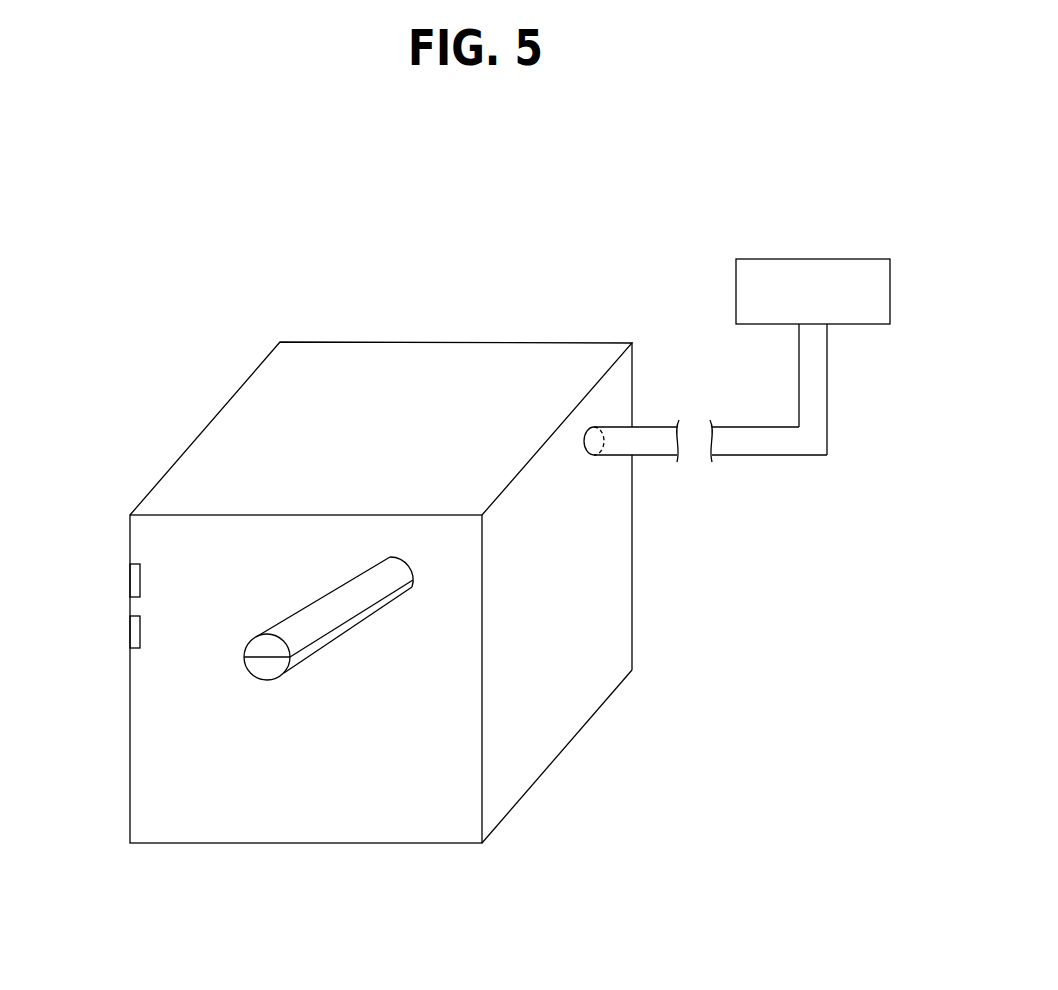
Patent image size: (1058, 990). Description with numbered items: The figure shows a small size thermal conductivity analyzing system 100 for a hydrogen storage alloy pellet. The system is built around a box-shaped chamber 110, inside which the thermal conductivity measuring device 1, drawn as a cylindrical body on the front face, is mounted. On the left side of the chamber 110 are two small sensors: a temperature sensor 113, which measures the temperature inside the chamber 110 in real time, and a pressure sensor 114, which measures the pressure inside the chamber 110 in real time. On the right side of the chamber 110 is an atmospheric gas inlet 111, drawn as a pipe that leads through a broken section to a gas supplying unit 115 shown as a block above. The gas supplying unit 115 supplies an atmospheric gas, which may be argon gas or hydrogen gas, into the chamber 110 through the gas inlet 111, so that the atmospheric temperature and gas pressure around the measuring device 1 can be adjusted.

The small size thermal conductivity analyzing system 100 is at (443, 276).
The chamber 110 is at (557, 758).
The atmospheric gas inlet 111 is at (606, 444).
The temperature sensor 113 is at (130, 580).
The pressure sensor 114 is at (130, 636).
The gas supplying unit 115 is at (812, 259).
The thermal conductivity measuring device 1 is at (280, 601).